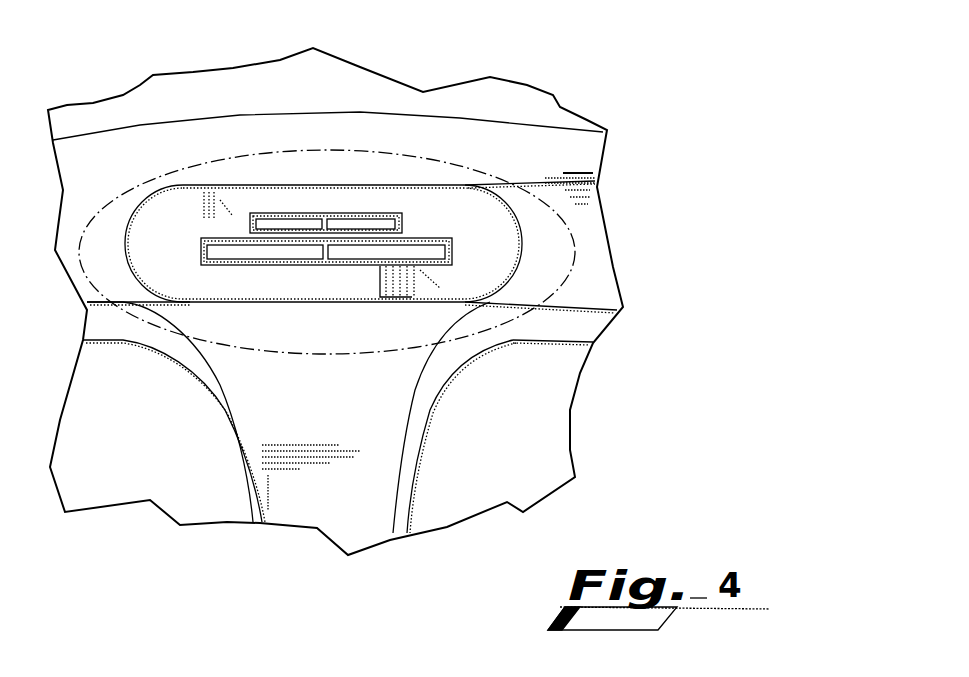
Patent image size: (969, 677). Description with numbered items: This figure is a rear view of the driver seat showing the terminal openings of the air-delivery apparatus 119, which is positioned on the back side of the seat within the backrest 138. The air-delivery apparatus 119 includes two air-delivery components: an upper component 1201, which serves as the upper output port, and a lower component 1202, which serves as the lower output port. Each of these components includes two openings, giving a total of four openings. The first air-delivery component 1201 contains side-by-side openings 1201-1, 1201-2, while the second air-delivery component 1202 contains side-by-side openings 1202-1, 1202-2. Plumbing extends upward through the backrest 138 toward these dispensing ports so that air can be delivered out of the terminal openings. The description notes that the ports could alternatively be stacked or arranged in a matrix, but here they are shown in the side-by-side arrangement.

The upper air-delivery component 1201 is at (420, 224).
The first opening of upper air-delivery component 1201-1 is at (279, 222).
The second opening of upper air-delivery component 1201-2 is at (361, 224).
The lower air-delivery component 1202 is at (316, 279).
The first opening of lower air-delivery component 1202-1 is at (250, 253).
The second opening of lower air-delivery component 1202-2 is at (448, 258).
The air-delivery apparatus 119 is at (574, 251).
The backrest 138 is at (345, 515).